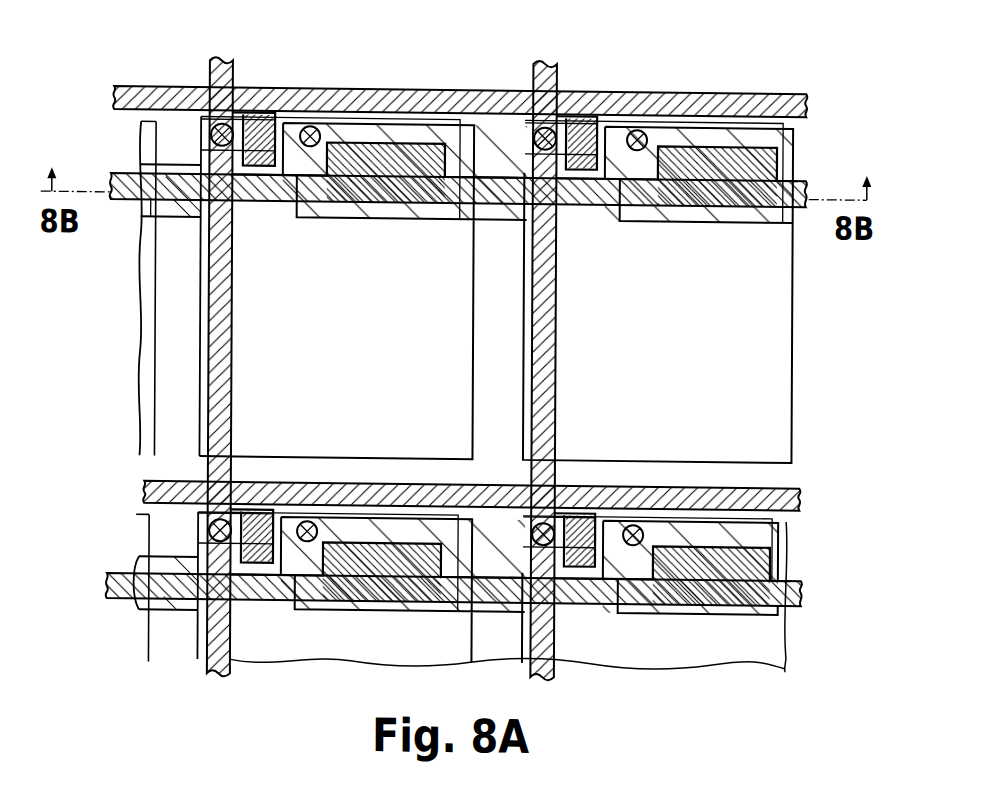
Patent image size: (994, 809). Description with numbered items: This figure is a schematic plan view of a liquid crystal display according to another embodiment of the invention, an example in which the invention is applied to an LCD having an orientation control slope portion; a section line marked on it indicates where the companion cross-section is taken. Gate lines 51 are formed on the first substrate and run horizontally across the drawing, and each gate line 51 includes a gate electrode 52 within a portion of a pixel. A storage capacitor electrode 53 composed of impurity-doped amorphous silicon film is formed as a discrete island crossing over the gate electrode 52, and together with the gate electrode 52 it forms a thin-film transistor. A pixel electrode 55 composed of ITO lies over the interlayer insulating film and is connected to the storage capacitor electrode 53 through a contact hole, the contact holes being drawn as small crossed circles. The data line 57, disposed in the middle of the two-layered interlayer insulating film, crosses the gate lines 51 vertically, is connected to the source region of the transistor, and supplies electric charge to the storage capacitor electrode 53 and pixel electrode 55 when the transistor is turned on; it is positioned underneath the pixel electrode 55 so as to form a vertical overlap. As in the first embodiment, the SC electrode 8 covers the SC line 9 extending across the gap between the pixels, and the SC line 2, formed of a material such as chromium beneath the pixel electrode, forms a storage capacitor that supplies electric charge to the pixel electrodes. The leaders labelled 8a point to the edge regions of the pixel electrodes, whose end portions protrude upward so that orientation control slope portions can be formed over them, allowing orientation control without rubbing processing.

The SC line 2 is at (798, 581).
The SC electrode 8 is at (682, 132).
The pixel electrode edge portion 8a is at (186, 136).
The SC line 9 is at (809, 190).
The gate line 51 is at (810, 103).
The gate electrode 52 is at (259, 122).
The storage capacitor electrode 53 is at (352, 135).
The pixel electrode 55 is at (464, 142).
The data line 57 is at (228, 64).